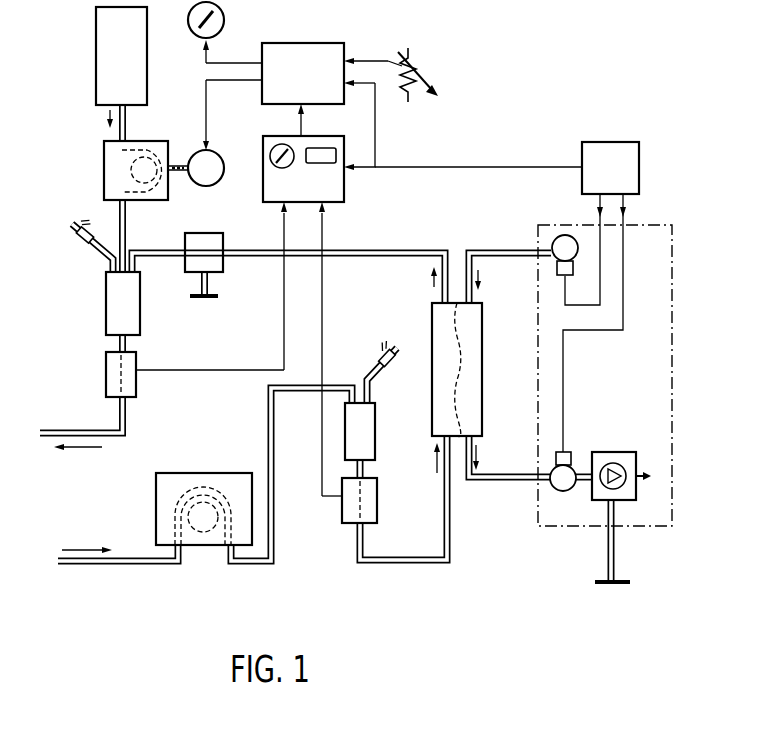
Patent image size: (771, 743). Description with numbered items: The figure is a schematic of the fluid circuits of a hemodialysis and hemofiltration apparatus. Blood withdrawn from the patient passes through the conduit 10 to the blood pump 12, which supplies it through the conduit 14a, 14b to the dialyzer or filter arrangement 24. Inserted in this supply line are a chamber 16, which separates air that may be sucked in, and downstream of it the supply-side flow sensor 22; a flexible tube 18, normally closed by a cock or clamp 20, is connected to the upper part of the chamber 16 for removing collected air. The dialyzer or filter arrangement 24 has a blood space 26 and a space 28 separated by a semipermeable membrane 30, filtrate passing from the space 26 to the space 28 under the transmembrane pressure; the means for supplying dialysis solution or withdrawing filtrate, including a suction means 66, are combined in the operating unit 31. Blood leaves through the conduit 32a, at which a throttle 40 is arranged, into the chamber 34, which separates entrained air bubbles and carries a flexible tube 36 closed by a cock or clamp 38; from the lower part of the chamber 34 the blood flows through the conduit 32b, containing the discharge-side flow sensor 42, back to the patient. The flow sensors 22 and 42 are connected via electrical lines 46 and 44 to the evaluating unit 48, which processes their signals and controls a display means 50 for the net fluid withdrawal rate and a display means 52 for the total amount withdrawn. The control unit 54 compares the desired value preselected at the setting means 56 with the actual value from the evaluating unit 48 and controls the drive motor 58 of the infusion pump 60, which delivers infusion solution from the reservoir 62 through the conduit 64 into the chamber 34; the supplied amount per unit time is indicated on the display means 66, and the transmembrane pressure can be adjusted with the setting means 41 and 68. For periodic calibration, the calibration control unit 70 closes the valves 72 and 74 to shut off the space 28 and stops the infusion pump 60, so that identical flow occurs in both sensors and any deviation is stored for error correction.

The conduit 10 is at (130, 558).
The blood pump 12 is at (204, 483).
The conduit 14a is at (276, 530).
The conduit 14b is at (451, 535).
The chamber 16 is at (375, 432).
The flexible tube 18 is at (367, 378).
The cock or clamp 20 is at (392, 360).
The supply-side flow sensor 22 is at (378, 516).
The dialyzer or filter arrangement 24 is at (431, 316).
The space or chamber 26 is at (443, 337).
The space or chamber 28 is at (472, 337).
The semipermeable membrane 30 is at (474, 393).
The operating unit 31 is at (537, 345).
The conduit 32a is at (350, 258).
The conduit 32b is at (63, 430).
The chamber 34 is at (108, 305).
The flexible tube 36 is at (100, 250).
The cock or clamp 38 is at (73, 239).
The throttle 40 is at (226, 269).
The setting means 41 is at (200, 298).
The discharge-side flow sensor 42 is at (106, 368).
The electrical line 44 is at (208, 369).
The electrical line 46 is at (324, 298).
The evaluating unit 48 is at (272, 184).
The display means 50 is at (270, 152).
The display means 52 is at (320, 148).
The control unit 54 is at (422, 106).
The setting means 56 is at (418, 64).
The drive motor 58 is at (204, 185).
The infusion pump 60 is at (144, 200).
The reservoir 62 is at (100, 58).
The conduit 64 is at (118, 210).
The display means 66 is at (224, 20).
The setting means 68 is at (624, 580).
The calibration control unit 70 is at (603, 152).
The valve 72 is at (573, 252).
The valve 74 is at (564, 485).